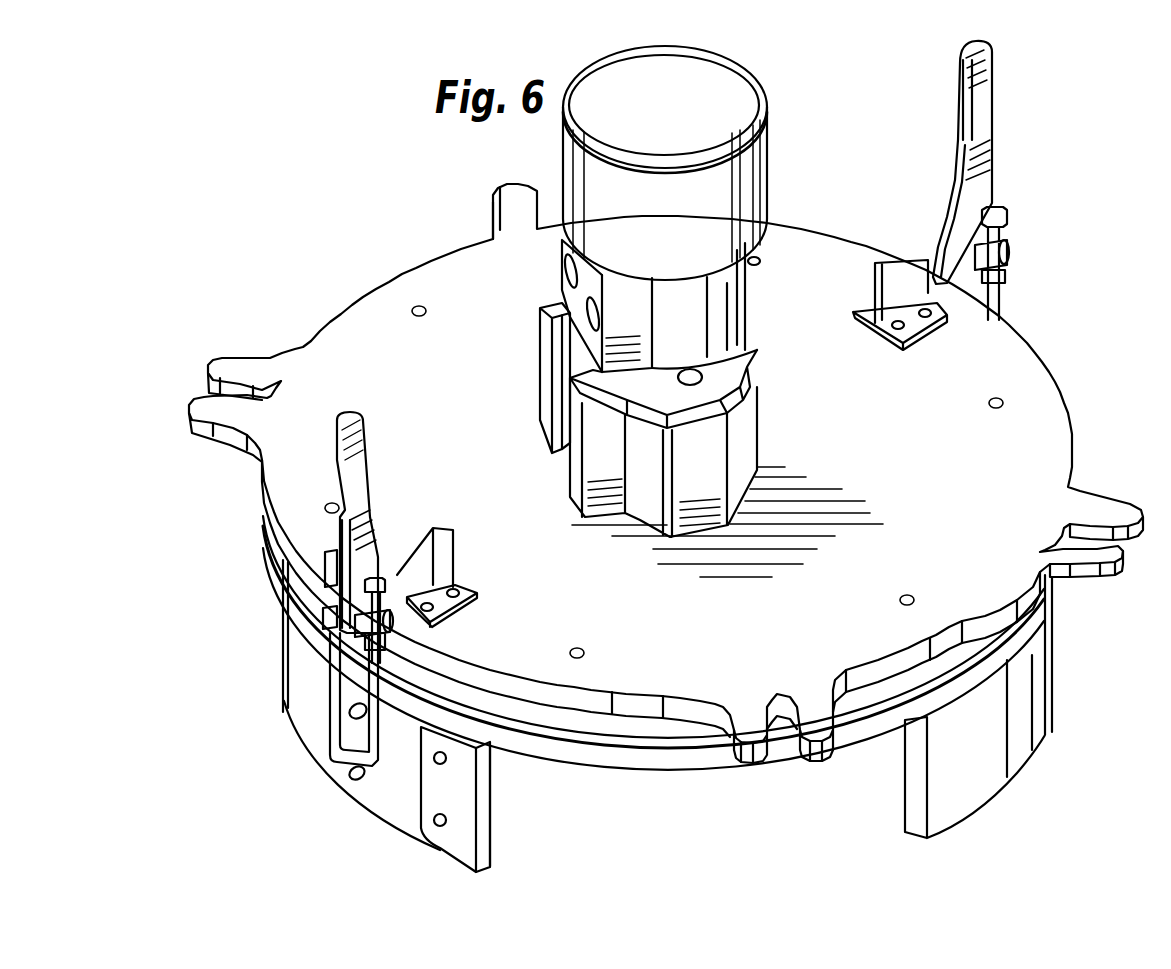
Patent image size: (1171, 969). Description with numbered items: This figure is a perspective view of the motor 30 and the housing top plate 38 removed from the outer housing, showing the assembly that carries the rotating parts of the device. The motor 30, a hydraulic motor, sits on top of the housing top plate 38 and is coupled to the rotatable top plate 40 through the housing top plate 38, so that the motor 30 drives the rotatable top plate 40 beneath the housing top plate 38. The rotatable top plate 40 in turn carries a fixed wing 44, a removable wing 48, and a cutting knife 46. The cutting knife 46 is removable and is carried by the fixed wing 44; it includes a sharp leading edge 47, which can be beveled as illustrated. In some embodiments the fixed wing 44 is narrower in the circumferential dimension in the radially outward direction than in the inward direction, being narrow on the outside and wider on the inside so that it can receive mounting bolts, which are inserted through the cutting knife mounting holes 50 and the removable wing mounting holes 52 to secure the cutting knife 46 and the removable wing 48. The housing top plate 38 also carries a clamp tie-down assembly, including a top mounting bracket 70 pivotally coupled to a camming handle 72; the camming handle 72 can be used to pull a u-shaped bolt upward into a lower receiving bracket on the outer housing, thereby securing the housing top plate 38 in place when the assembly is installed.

The motor 30 is at (748, 155).
The housing top plate 38 is at (922, 448).
The rotatable top plate 40 is at (560, 752).
The fixed wing 44 is at (363, 815).
The cutting knife 46 is at (440, 848).
The sharp leading edge 47 is at (487, 828).
The removable wing 48 is at (348, 770).
The cutting knife mounting holes 50 is at (433, 762).
The removable wing mounting holes 52 is at (350, 778).
The top mounting bracket 70 is at (440, 558).
The camming handle 72 is at (357, 465).